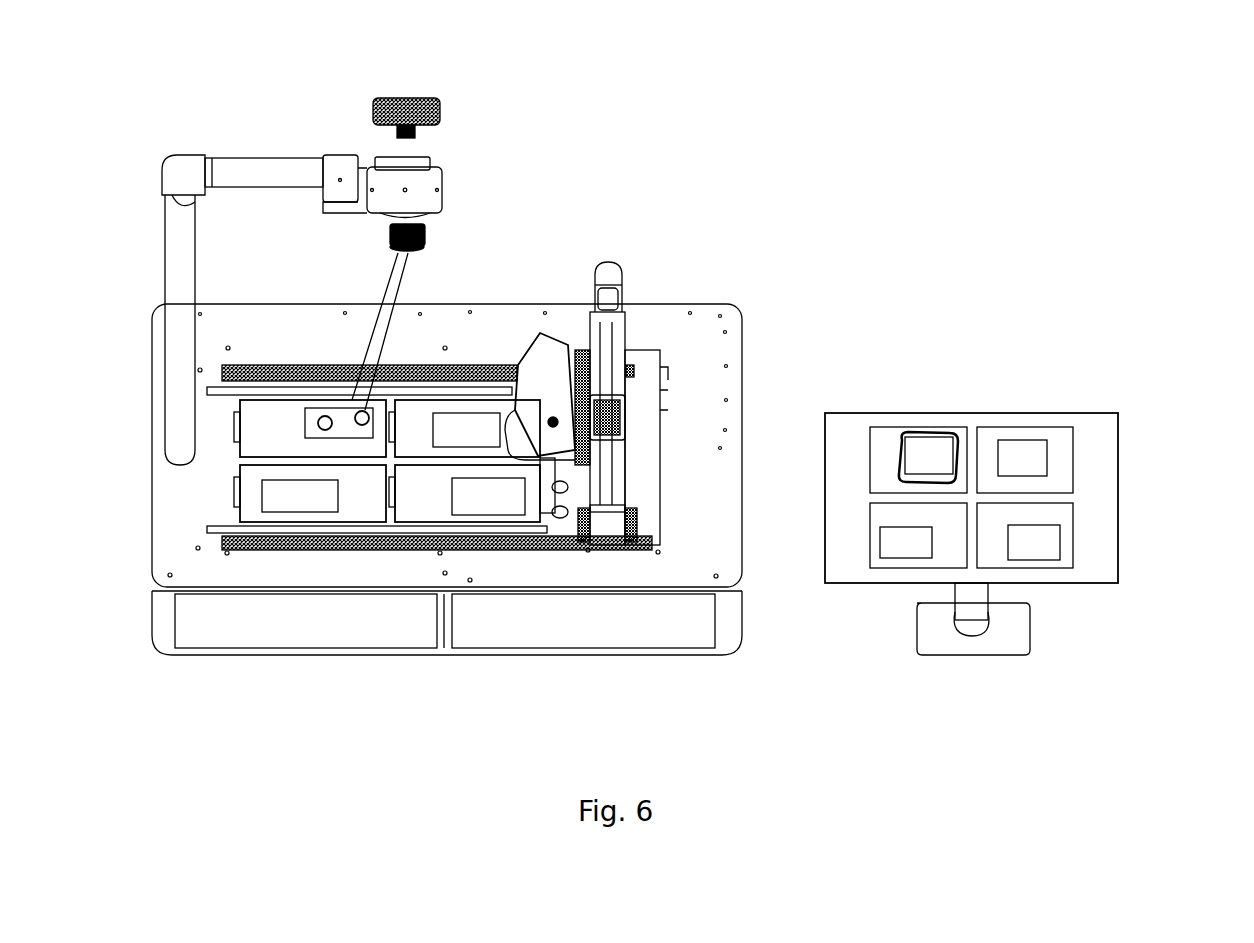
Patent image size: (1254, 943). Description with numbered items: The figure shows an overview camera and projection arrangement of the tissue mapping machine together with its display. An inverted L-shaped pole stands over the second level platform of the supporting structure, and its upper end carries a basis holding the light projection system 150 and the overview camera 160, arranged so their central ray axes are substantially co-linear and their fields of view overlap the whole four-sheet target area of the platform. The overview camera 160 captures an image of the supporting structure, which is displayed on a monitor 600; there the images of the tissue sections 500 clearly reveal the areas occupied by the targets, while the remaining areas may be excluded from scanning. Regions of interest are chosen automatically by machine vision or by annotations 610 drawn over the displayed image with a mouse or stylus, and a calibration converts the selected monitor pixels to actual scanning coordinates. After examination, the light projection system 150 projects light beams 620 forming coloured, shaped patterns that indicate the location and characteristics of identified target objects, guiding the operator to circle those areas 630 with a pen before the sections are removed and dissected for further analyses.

The overview camera 160 is at (410, 88).
The light projection system 150 is at (428, 245).
The light beams 620 is at (362, 410).
The areas 630 is at (340, 398).
The monitor 600 is at (1038, 476).
The annotations 610 is at (933, 433).
The tissue sections 500 is at (1053, 520).